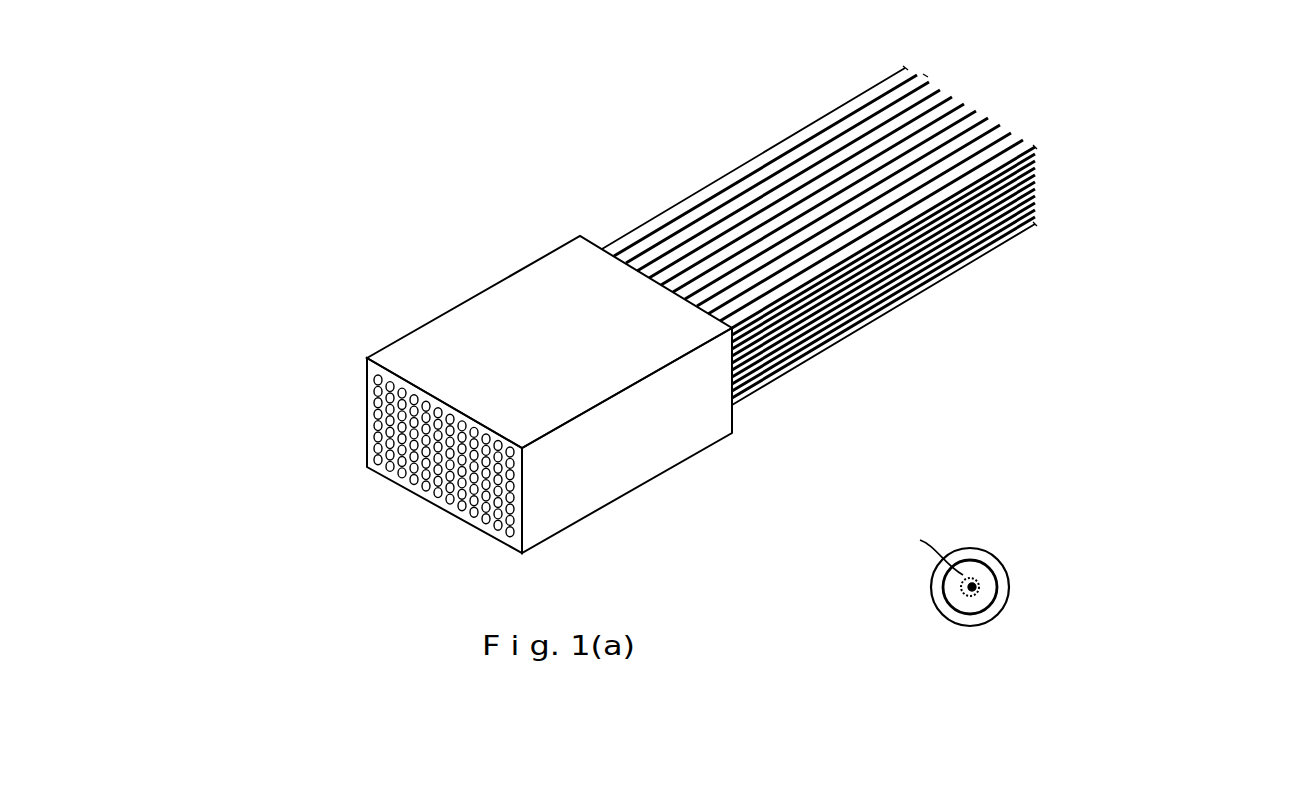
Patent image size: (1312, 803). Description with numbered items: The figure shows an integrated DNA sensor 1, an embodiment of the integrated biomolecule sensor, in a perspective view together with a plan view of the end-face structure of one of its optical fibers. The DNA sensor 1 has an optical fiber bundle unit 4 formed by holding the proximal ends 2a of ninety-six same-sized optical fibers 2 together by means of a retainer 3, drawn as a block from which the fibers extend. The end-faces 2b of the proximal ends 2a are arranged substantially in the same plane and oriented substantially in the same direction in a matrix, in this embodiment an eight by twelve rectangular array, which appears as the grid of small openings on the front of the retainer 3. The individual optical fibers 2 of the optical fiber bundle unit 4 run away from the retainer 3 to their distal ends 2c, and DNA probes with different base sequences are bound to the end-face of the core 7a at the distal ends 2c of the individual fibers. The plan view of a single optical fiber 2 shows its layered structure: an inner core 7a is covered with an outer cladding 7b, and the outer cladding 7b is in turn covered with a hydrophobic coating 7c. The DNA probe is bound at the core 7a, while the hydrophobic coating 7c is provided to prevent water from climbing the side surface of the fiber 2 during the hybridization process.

In FIG. 1A, the DNA sensor 1 is at (583, 69).
In FIG. 1A, the optical fiber bundle unit 4 is at (466, 291).
In FIG. 1A, the retainer 3 is at (540, 297).
In FIG. 1A, the proximal ends 2a is at (624, 520).
In FIG. 1A, the end-faces 2b is at (378, 390).
In FIG. 1A, the optical fiber 2 is at (750, 160).
In FIG. 1B, the optical fiber 2 is at (920, 585).
In FIG. 1A, the distal ends 2c is at (1082, 238).
In FIG. 1B, the core 7a is at (970, 607).
In FIG. 1B, the cladding 7b is at (1000, 585).
In FIG. 1B, the hydrophobic coating 7c is at (1007, 575).